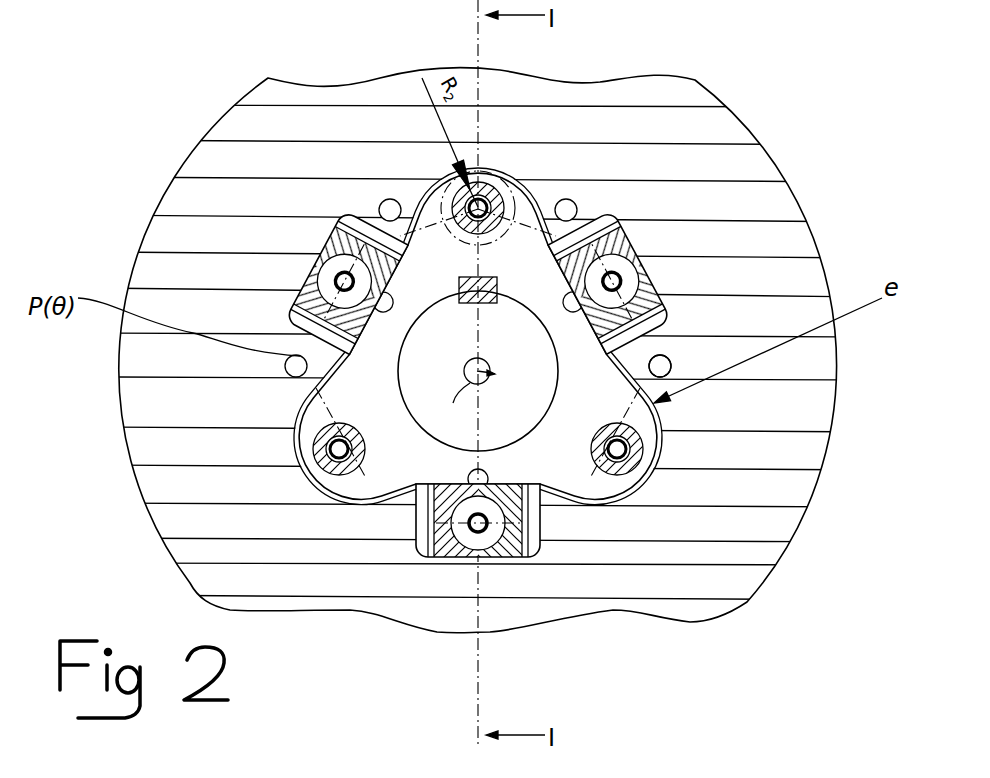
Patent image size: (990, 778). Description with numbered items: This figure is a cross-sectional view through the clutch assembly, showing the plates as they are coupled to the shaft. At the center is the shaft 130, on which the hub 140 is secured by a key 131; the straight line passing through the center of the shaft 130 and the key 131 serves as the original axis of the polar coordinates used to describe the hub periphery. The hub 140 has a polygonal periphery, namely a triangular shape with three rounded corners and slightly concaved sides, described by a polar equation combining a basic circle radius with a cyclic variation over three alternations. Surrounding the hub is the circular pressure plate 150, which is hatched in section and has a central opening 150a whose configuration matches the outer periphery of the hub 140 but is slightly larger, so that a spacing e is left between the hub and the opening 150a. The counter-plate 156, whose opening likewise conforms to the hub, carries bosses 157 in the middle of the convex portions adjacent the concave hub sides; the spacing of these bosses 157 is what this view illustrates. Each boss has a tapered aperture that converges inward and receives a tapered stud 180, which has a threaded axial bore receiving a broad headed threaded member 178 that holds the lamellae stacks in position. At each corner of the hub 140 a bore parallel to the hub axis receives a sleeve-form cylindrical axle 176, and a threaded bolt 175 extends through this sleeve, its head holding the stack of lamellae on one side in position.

The shaft 130 is at (450, 367).
The key 131 is at (531, 224).
The hub 140 is at (605, 411).
The pressure plate 150 is at (242, 495).
The central opening 150a is at (624, 488).
The counter-plate 156 is at (478, 451).
The bosses 157 is at (525, 520).
The threaded bolt 175 is at (683, 470).
The cylindrical axle 176 is at (656, 427).
The threaded member 178 is at (431, 520).
The tapered stud 180 is at (478, 523).